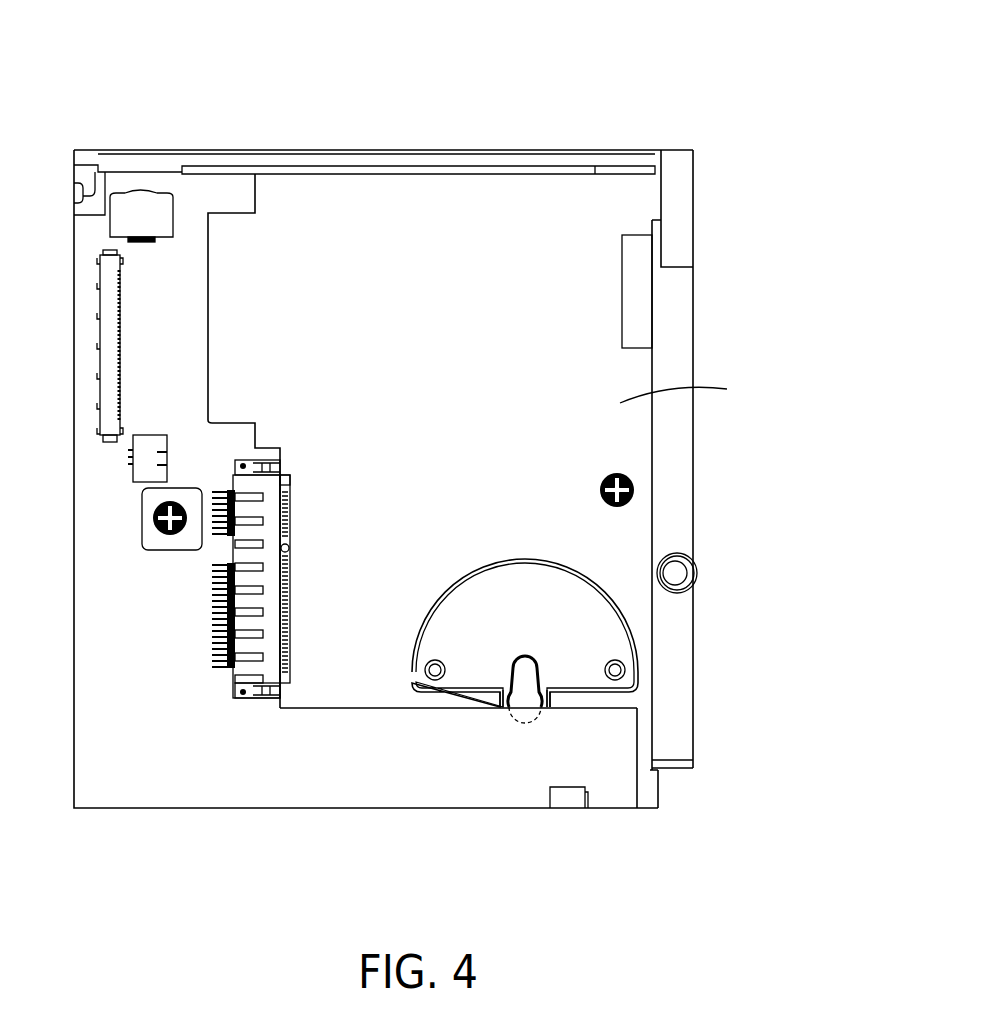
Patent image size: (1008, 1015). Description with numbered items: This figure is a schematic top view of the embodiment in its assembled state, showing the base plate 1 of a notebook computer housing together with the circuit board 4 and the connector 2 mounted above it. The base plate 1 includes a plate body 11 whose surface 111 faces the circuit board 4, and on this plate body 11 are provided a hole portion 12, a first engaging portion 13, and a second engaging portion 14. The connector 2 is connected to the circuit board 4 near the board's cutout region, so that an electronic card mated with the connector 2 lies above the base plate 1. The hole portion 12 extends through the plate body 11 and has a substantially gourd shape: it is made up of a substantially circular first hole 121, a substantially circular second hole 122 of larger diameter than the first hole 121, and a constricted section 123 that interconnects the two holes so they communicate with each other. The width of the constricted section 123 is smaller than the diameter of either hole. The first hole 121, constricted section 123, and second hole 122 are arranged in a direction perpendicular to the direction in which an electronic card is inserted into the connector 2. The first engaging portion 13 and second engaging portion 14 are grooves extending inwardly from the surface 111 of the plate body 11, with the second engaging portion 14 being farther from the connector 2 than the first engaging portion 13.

The base plate 1 is at (590, 121).
The plate body 11 is at (677, 150).
The surface 111 is at (702, 319).
The circuit board 4 is at (236, 423).
The connector 2 is at (244, 667).
The hole portion 12 is at (513, 656).
The first engaging portion 13 is at (440, 661).
The second engaging portion 14 is at (610, 661).
The first hole 121 is at (525, 655).
The second hole 122 is at (525, 703).
The constricted section 123 is at (540, 682).